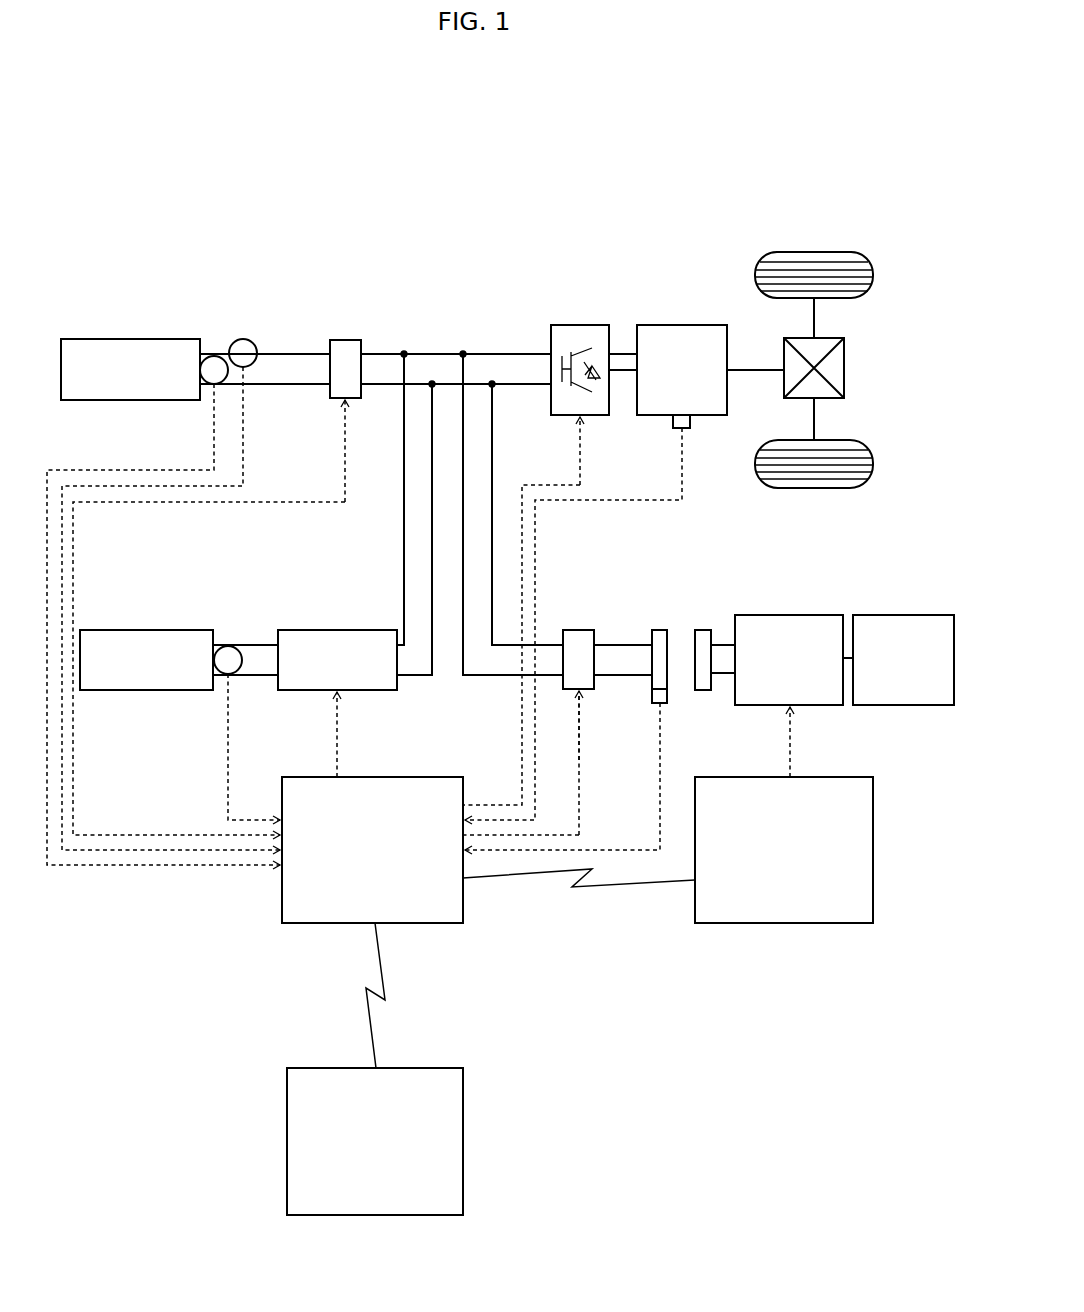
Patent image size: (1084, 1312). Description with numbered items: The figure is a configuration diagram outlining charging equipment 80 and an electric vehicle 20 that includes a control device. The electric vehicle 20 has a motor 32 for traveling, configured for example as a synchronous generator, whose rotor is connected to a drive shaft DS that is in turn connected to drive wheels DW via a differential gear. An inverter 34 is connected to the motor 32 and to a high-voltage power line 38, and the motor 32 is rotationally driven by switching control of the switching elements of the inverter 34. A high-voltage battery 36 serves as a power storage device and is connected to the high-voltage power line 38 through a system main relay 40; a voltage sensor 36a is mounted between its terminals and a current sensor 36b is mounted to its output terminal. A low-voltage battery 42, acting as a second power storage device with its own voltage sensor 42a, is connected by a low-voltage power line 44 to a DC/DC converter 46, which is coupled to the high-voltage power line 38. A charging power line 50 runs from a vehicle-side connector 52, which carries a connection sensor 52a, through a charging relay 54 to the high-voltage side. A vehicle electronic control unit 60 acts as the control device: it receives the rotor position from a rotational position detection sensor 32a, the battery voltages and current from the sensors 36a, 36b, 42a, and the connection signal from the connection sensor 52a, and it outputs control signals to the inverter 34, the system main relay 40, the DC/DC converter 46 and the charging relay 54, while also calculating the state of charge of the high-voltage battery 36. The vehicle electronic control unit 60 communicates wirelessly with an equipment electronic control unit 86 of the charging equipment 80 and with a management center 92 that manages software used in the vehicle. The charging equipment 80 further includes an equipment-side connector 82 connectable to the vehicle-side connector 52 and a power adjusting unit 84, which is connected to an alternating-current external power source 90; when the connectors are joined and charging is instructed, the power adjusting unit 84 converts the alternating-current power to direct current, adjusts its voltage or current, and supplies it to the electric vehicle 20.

The electric vehicle 20 is at (514, 249).
The motor 32 is at (685, 325).
The rotational position detection sensor 32a is at (672, 423).
The inverter 34 is at (581, 325).
The high-voltage battery 36 is at (105, 338).
The voltage sensor 36a is at (213, 341).
The current sensor 36b is at (245, 338).
The high-voltage power line 38 is at (418, 382).
The system main relay 40 is at (345, 339).
The low-voltage battery 42 is at (150, 630).
The voltage sensor 42a is at (228, 645).
The low-voltage power line 44 is at (250, 646).
The DC/DC converter 46 is at (325, 630).
The charging power line 50 is at (610, 646).
The vehicle-side connector 52 is at (661, 630).
The connection sensor 52a is at (651, 701).
The charging relay 54 is at (578, 630).
The vehicle electronic control unit 60 is at (378, 777).
The charging equipment 80 is at (753, 599).
The equipment-side connector 82 is at (704, 630).
The power adjusting unit 84 is at (802, 615).
The equipment electronic control unit 86 is at (816, 777).
The external power source 90 is at (900, 615).
The management center 92 is at (433, 1068).
The drive wheels DW is at (813, 251).
The drive shaft DS is at (756, 366).